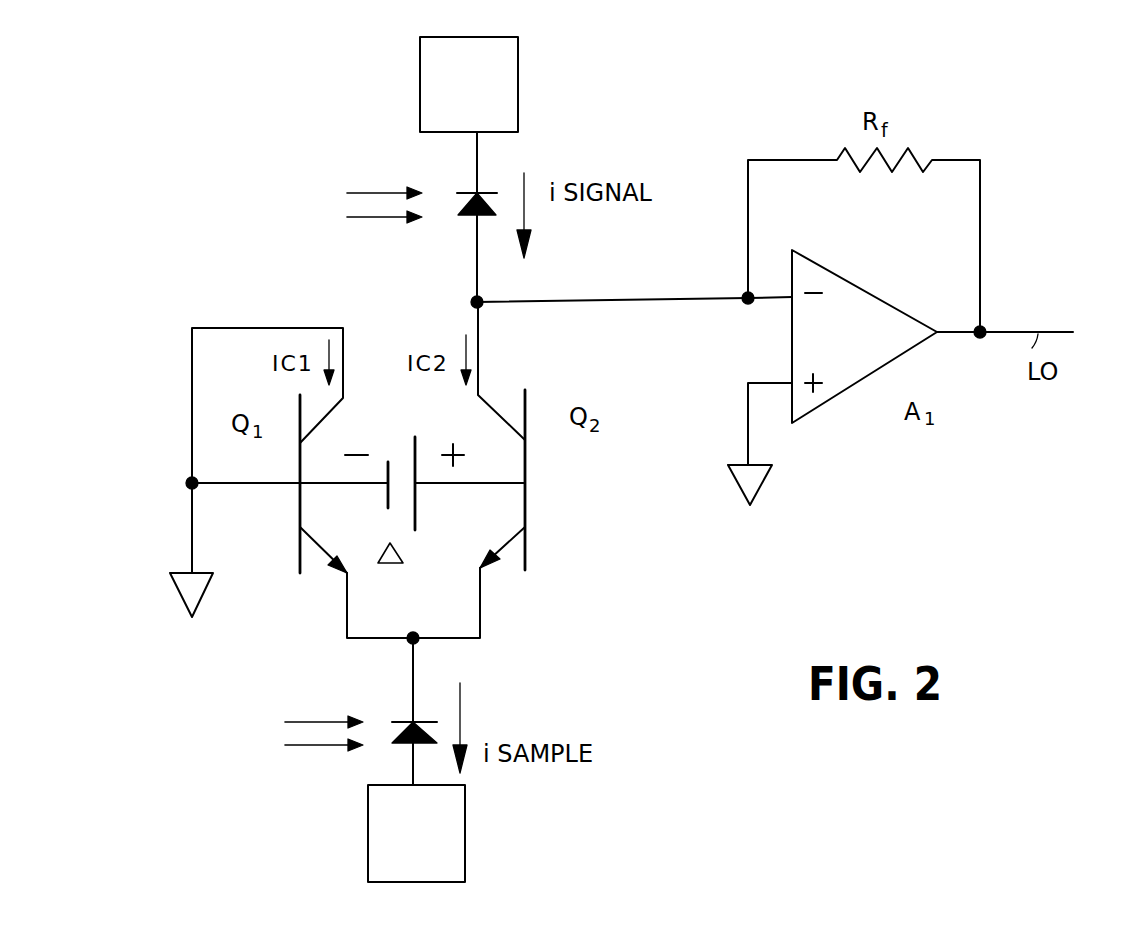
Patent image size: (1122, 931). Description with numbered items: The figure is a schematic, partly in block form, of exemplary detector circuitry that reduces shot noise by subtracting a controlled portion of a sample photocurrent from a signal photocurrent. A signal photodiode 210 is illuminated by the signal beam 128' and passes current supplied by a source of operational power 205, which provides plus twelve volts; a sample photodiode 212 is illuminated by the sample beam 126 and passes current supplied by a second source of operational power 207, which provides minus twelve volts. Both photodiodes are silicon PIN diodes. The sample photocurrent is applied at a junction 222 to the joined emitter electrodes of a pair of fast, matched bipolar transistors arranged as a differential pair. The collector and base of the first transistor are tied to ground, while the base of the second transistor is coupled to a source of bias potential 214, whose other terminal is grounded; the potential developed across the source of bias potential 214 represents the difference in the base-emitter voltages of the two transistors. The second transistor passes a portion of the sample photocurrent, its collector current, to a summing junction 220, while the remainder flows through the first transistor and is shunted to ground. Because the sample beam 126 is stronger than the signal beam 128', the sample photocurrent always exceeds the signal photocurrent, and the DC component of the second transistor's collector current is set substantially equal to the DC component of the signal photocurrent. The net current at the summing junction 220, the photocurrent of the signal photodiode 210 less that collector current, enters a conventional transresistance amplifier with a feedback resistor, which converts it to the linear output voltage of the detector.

The source of operational power 205 is at (518, 62).
The source of operational power 207 is at (465, 810).
The signal photodiode 210 is at (485, 190).
The sample photodiode 212 is at (398, 718).
The source of bias potential 214 is at (418, 441).
The summing junction 220 is at (484, 298).
The junction 222 is at (415, 634).
The signal beam 128' is at (258, 215).
The sample beam 126 is at (252, 752).